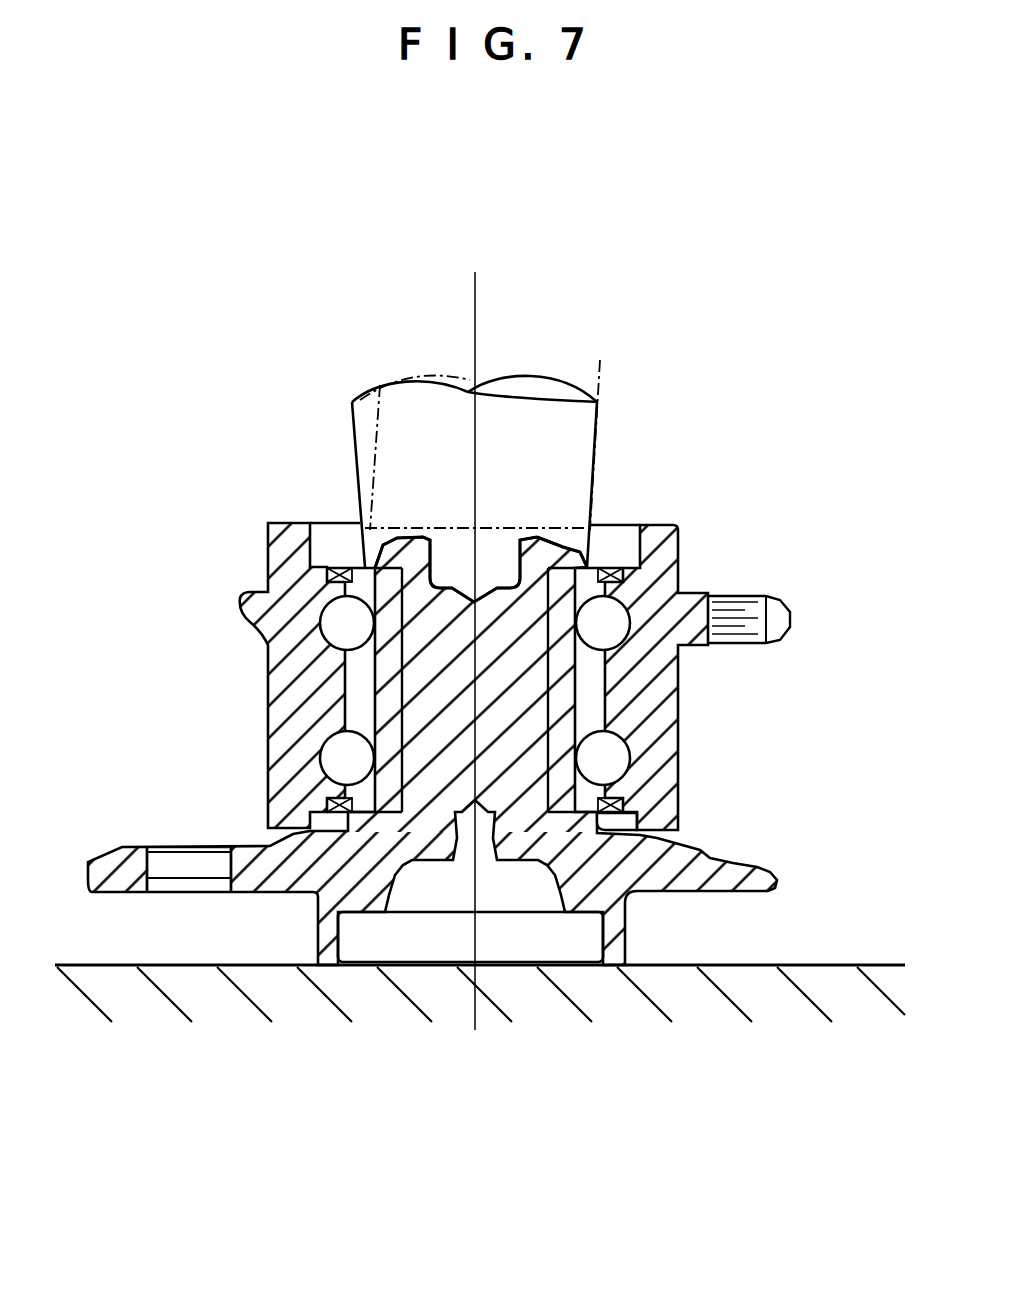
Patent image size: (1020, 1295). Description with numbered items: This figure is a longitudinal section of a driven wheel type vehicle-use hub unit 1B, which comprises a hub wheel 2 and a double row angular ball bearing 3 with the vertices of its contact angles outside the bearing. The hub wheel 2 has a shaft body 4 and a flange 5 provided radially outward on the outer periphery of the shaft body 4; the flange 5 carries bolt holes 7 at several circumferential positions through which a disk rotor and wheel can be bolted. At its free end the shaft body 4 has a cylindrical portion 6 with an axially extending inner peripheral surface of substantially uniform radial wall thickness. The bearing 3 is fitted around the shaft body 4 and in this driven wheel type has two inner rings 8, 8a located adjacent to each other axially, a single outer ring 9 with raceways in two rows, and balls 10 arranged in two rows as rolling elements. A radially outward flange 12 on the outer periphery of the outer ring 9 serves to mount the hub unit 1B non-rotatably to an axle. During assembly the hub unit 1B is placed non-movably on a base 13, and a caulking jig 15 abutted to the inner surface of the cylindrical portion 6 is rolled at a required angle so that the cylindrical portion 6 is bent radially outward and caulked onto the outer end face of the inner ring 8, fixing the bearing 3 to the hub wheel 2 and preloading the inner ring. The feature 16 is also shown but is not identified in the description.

The hub unit 1B is at (735, 308).
The hub wheel 2 is at (373, 920).
The double row angular ball bearing 3 is at (278, 750).
The shaft body 4 is at (537, 677).
The flange 5 is at (740, 868).
The cylindrical portion 6 is at (393, 557).
The bolt holes 7 is at (188, 870).
The inner ring 8 is at (590, 562).
The inner ring 8a is at (582, 805).
The outer ring 9 is at (665, 565).
The balls 10 is at (345, 753).
The radially outward flange 12 is at (790, 598).
The base 13 is at (800, 965).
The caulking jig 15 is at (590, 405).
The center line 16 is at (480, 318).